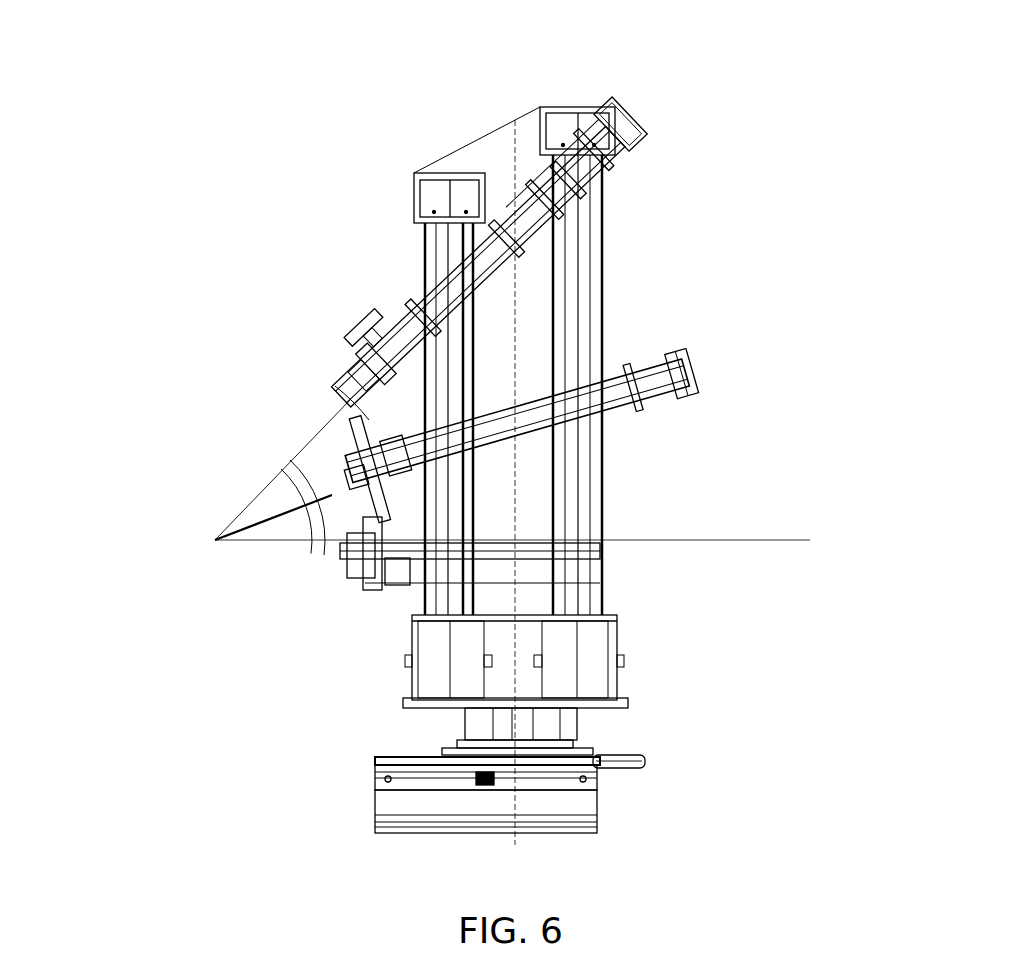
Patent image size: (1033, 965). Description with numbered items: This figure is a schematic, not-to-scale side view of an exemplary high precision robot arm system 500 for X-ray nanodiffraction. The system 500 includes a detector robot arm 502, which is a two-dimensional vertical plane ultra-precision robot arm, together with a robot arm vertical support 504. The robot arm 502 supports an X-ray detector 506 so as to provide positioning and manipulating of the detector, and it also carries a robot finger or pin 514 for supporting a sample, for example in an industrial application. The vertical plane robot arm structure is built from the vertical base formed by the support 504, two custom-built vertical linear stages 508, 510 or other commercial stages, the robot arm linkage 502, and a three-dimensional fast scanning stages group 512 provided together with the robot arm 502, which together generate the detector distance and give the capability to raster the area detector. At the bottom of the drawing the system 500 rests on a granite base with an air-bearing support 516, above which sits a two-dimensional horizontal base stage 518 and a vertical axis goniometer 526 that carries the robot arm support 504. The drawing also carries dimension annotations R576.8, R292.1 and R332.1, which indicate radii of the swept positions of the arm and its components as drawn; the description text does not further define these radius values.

The high precision robot arm system 500 is at (490, 49).
The detector robot arm 502 is at (641, 147).
The robot arm vertical support 504 is at (594, 305).
The X-ray detector 506 is at (355, 383).
The vertical linear stage 508 is at (443, 250).
The vertical linear stage 510 is at (582, 240).
The 3D fast scanning stages group 512 is at (347, 320).
The robot finger or pin 514 is at (243, 529).
The granite base with air-bearing support 516 is at (387, 811).
The 2D horizontal base stage 518 is at (595, 752).
The vertical axis goniometer 526 is at (484, 729).
The arm reach radius R576.8 is at (350, 398).
The inner radius R292.1 is at (312, 563).
The outer radius R332.1 is at (308, 606).